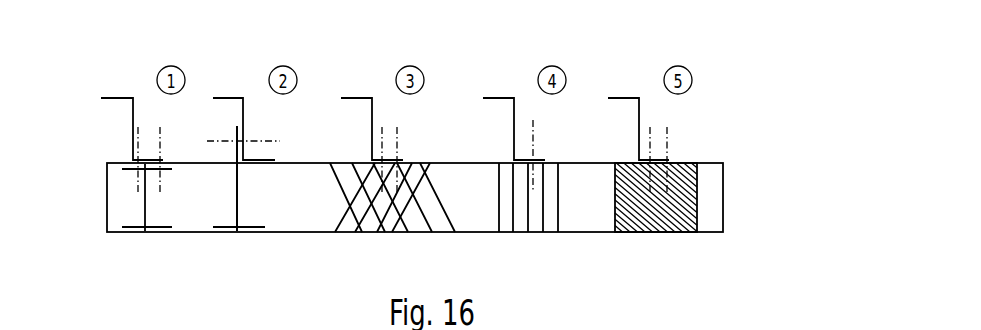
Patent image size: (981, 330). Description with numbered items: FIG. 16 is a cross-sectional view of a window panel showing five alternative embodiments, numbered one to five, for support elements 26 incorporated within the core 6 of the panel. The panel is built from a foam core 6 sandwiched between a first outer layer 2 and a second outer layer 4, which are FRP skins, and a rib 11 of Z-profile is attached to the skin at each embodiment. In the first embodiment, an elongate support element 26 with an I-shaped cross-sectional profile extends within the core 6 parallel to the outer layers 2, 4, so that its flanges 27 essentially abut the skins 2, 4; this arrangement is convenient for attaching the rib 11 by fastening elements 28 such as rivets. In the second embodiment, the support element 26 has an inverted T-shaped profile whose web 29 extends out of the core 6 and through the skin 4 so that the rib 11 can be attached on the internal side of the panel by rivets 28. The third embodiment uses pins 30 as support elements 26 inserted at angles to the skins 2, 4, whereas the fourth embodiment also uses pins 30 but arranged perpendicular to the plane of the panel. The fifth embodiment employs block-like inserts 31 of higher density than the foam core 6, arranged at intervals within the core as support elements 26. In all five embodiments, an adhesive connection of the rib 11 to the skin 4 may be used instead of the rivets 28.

The first outer layer 2 is at (197, 236).
The second outer layer 4 is at (301, 160).
The core 6 is at (306, 204).
The rib 11 is at (130, 94).
The support element 26 is at (142, 208).
The flange 27 is at (123, 169).
The fastening element 28 is at (162, 152).
The web 29 is at (239, 195).
The pin 30 is at (412, 205).
The block-like insert 31 is at (698, 204).